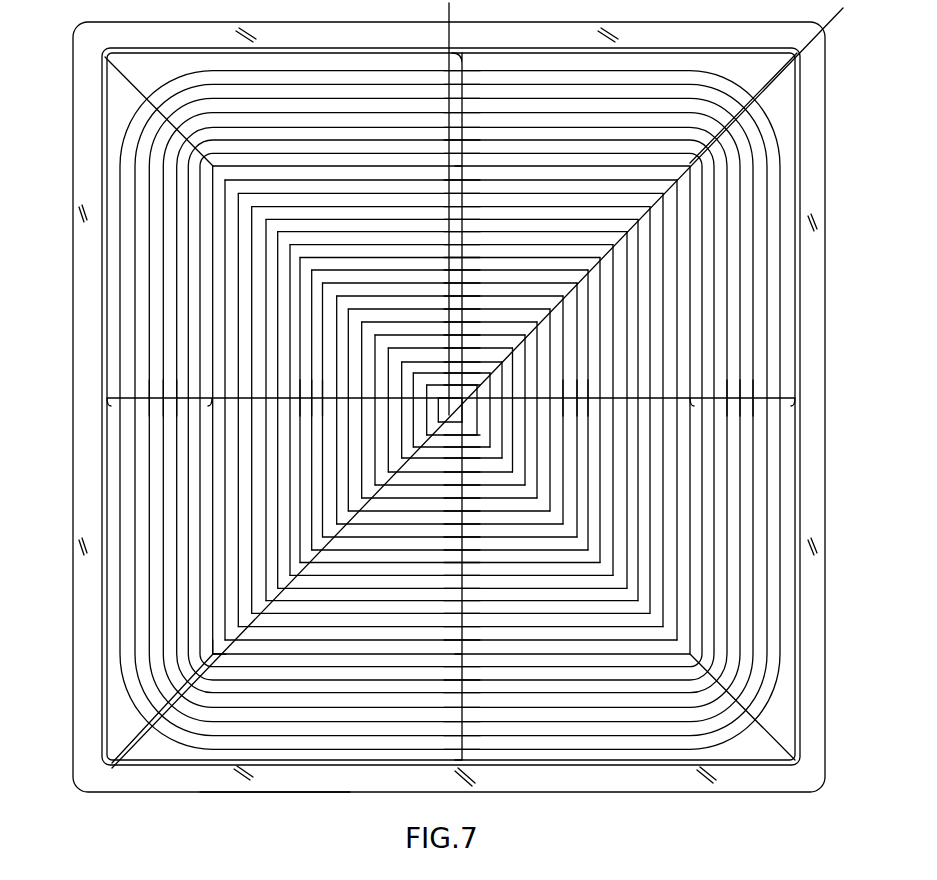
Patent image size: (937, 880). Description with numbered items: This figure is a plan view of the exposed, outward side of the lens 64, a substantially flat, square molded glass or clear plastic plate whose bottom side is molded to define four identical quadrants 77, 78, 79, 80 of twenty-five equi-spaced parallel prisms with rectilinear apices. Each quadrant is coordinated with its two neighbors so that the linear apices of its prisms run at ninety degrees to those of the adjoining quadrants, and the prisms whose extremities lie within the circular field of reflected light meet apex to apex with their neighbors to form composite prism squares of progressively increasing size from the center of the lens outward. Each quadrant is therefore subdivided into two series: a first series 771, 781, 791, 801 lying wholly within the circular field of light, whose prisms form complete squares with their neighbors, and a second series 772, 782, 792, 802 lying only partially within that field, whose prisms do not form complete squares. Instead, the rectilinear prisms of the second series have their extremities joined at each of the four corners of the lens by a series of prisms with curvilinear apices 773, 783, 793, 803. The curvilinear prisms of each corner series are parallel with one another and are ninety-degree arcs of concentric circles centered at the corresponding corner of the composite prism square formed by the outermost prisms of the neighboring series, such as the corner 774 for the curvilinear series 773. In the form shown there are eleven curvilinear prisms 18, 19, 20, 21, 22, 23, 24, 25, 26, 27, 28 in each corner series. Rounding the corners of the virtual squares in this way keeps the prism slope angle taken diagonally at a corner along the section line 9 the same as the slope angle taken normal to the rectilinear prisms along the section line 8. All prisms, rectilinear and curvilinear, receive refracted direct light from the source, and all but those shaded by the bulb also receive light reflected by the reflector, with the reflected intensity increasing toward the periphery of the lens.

The section line 8- 8 is at (473, 415).
The section line 9- 9 is at (452, 448).
The curvilinear prism 18 is at (217, 655).
The curvilinear prism 19 is at (220, 677).
The curvilinear prism 20 is at (214, 682).
The curvilinear prism 21 is at (203, 697).
The curvilinear prism 22 is at (155, 687).
The curvilinear prism 23 is at (148, 687).
The curvilinear prism 24 is at (133, 697).
The curvilinear prism 25 is at (120, 697).
The curvilinear prism 26 is at (110, 700).
The curvilinear prism 27 is at (112, 728).
The curvilinear prism 28 is at (110, 747).
The lens 64 is at (278, 792).
The quadrant of prisms 77 is at (282, 453).
The quadrant of prisms 78 is at (434, 563).
The quadrant of prisms 79 is at (652, 461).
The quadrant of prisms 80 is at (430, 277).
The first series of rectilinear prisms 771 is at (319, 398).
The second series of rectilinear prisms 772 is at (171, 398).
The series of curvilinear prisms 773 is at (168, 703).
The corner of composite prism square 774 is at (215, 657).
The first series of rectilinear prisms 781 is at (462, 522).
The second series of rectilinear prisms 782 is at (462, 697).
The series of curvilinear prisms 783 is at (748, 713).
The first series of rectilinear prisms 791 is at (585, 398).
The second series of rectilinear prisms 792 is at (748, 398).
The series of curvilinear prisms 793 is at (749, 102).
The first series of rectilinear prisms 801 is at (462, 274).
The second series of rectilinear prisms 802 is at (462, 107).
The series of curvilinear prisms 803 is at (165, 117).